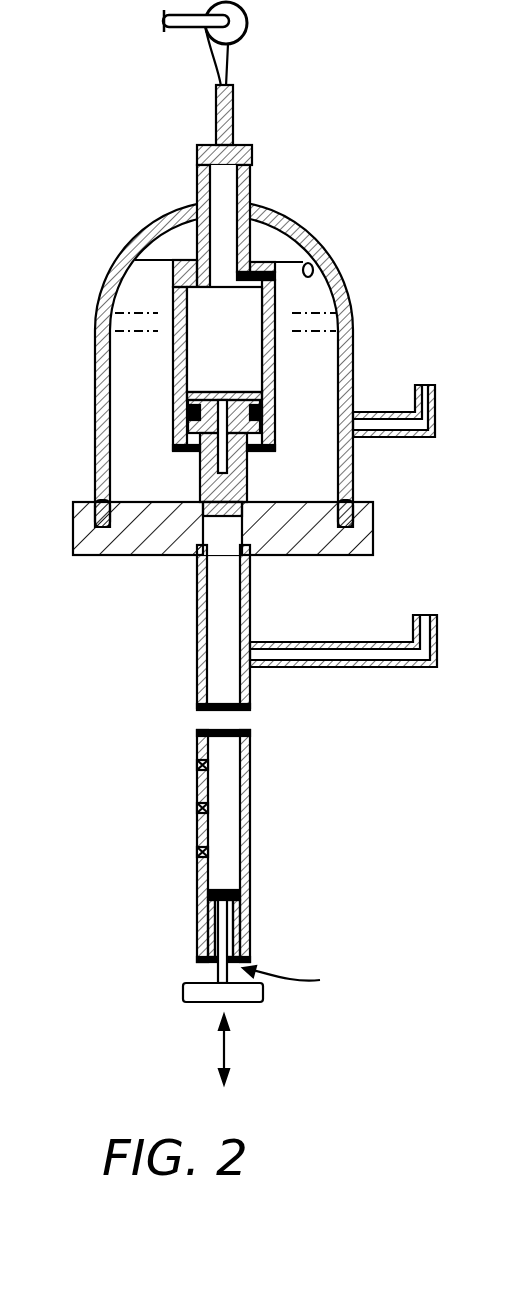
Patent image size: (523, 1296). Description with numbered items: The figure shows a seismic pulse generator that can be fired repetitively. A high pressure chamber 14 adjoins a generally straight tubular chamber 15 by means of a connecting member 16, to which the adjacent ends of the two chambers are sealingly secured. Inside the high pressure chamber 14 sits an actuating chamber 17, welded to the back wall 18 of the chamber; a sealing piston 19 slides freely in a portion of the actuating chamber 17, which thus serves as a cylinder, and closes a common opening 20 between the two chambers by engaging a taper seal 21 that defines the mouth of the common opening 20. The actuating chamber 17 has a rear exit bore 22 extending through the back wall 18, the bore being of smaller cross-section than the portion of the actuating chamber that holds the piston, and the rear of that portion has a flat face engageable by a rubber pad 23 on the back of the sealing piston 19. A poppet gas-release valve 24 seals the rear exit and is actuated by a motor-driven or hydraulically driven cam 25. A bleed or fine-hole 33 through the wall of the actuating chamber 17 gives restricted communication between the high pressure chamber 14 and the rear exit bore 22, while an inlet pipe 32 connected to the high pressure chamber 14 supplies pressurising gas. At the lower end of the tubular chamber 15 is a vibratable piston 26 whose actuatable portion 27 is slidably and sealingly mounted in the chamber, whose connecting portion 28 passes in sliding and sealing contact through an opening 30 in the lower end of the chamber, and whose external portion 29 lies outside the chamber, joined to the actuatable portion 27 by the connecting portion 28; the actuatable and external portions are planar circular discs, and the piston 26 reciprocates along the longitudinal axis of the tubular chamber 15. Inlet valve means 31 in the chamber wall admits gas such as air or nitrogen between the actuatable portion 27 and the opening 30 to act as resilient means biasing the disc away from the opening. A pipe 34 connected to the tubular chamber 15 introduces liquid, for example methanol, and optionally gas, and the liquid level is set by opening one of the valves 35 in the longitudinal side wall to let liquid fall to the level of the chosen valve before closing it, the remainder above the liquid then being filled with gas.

The high pressure chamber 14 is at (325, 351).
The tubular chamber 15 is at (233, 677).
The connecting member 16 is at (365, 532).
The actuating chamber 17 is at (272, 332).
The back wall 18 is at (312, 265).
The sealing piston 19 is at (200, 467).
The common opening 20 is at (203, 470).
The taper seal 21 is at (200, 512).
The rear exit bore 22 is at (197, 180).
The rubber pad 23 is at (248, 388).
The poppet gas-release valve 24 is at (214, 150).
The cam 25 is at (212, 54).
The piston 26 is at (302, 978).
The actuatable portion 27 is at (205, 893).
The connecting portion 28 is at (195, 975).
The external portion 29 is at (243, 1000).
The opening 30 is at (237, 940).
The inlet valve means 31 is at (200, 926).
The inlet pipe 32 is at (405, 437).
The bleed or fine-hole 33 is at (265, 272).
The pipe 34 is at (380, 668).
The valves 35 is at (197, 852).